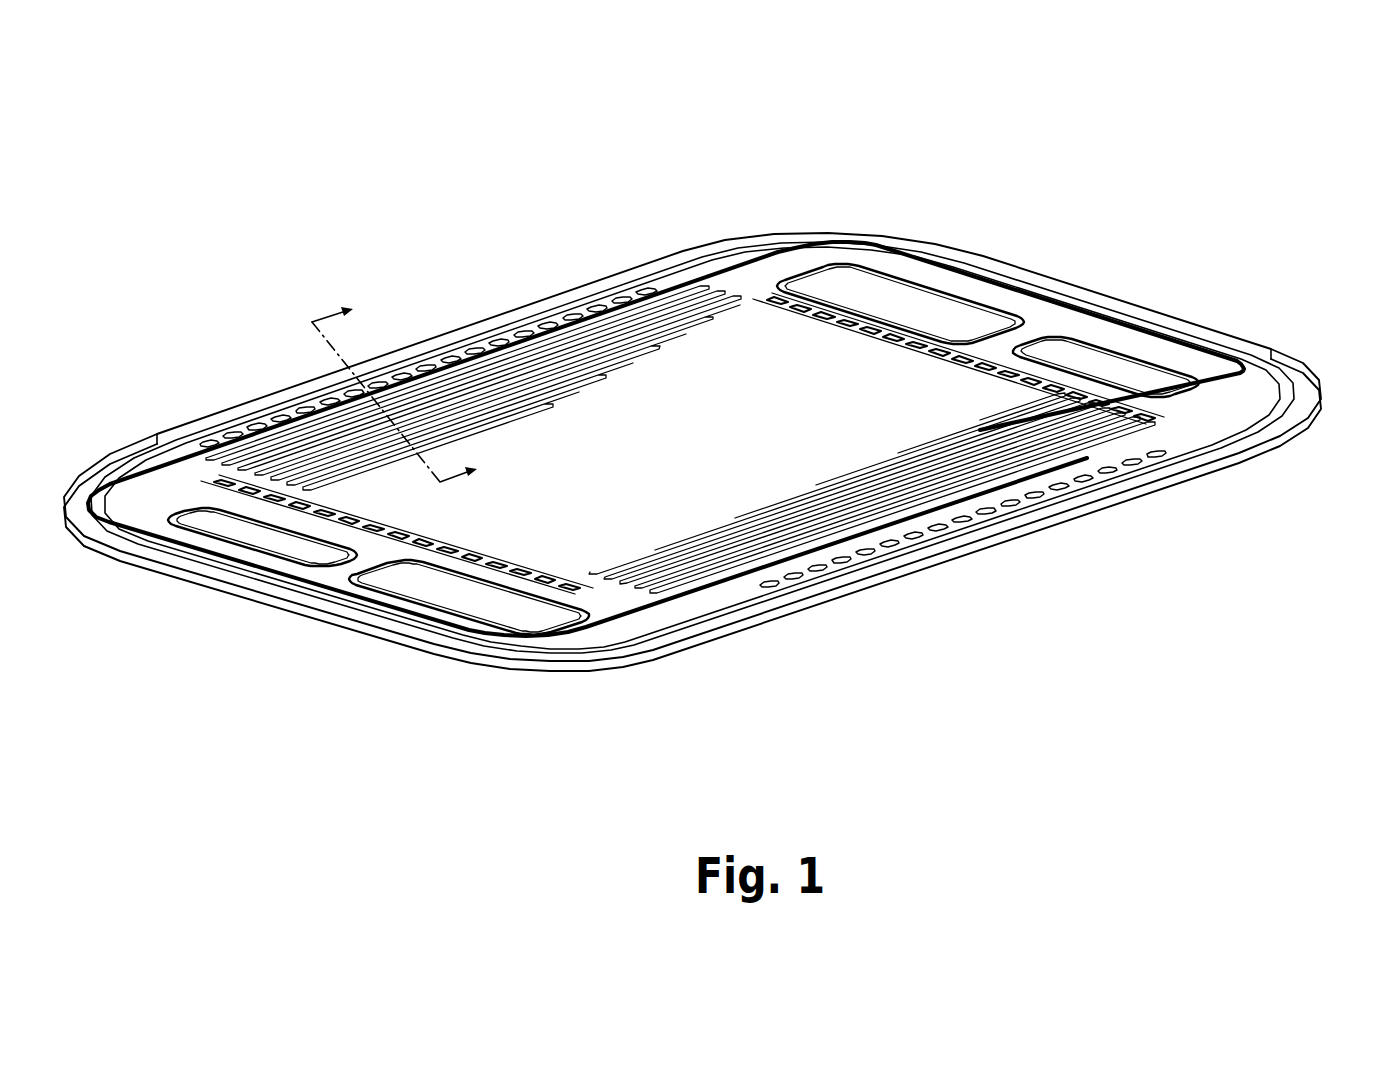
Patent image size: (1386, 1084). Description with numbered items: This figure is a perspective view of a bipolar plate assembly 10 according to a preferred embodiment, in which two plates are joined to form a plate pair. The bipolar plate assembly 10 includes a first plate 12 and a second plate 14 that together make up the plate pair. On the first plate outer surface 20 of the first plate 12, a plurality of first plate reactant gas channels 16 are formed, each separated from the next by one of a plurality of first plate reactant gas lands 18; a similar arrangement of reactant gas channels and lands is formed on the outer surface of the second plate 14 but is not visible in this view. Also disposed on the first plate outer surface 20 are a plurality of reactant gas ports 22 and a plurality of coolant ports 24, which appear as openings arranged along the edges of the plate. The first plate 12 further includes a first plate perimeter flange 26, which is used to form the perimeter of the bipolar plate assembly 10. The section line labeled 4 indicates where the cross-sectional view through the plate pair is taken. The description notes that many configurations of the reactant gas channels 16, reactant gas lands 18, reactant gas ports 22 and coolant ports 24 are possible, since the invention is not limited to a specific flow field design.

The bipolar plate assembly 10 is at (938, 219).
The first plate 12 is at (1217, 450).
The second plate 14 is at (1123, 497).
The first plate reactant gas channels 16 is at (257, 476).
The first plate reactant gas lands 18 is at (290, 484).
The first plate outer surface 20 is at (575, 446).
The reactant gas ports 22 is at (826, 311).
The coolant ports 24 is at (660, 282).
The first plate perimeter flange 26 is at (1293, 377).
The section line 4- 4 is at (401, 394).